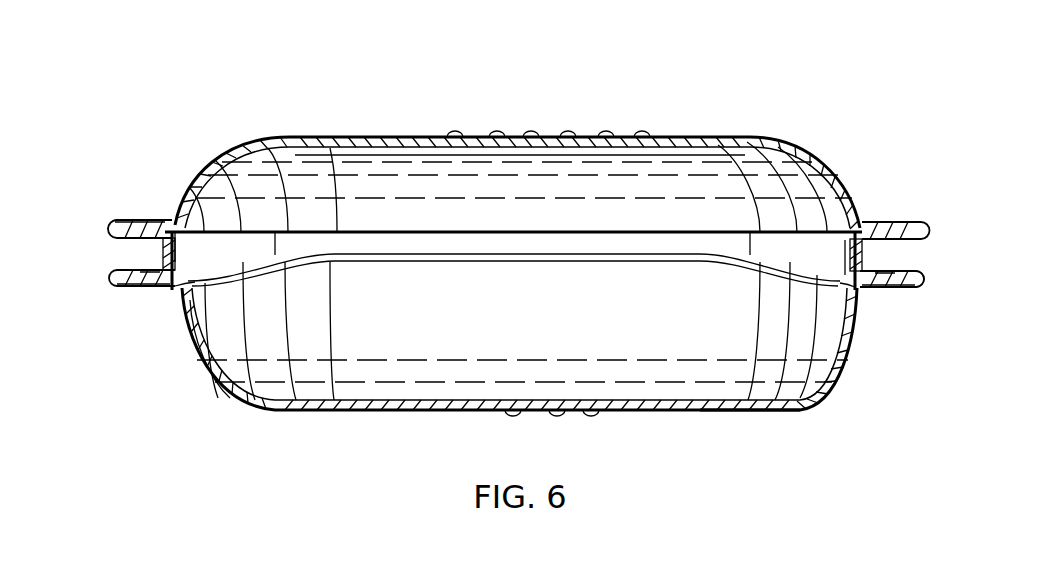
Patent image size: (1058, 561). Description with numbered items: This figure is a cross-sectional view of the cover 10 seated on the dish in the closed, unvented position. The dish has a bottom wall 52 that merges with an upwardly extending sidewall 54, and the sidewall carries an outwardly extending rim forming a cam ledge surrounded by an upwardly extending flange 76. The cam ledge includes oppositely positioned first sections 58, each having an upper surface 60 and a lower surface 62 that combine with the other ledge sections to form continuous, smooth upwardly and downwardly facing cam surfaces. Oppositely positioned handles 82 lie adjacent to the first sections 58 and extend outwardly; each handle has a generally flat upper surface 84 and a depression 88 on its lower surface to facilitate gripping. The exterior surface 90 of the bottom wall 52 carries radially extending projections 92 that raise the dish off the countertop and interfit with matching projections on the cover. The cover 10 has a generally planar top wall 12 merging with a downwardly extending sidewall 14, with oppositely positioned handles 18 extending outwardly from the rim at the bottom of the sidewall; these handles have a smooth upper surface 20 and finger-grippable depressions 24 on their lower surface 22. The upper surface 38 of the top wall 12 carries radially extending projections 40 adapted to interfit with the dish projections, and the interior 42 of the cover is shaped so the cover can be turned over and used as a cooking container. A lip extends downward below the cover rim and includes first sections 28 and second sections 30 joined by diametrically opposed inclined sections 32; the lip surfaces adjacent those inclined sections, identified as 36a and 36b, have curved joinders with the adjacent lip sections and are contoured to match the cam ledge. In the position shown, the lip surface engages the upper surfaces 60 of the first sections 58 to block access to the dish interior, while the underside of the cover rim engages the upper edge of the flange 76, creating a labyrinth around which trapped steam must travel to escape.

The cover 10 is at (805, 135).
The top wall 12 is at (290, 136).
The sidewall 14 is at (184, 200).
The handles 18 is at (116, 220).
The upper surface 20 is at (123, 222).
The lower surface 22 is at (118, 243).
The depressions 24 is at (110, 252).
The first sections 28 is at (182, 253).
The second sections 30 is at (550, 243).
The inclined sections 32 is at (273, 257).
The lip surface 36a is at (757, 268).
The lip surface 36b is at (270, 270).
The upper surface 38 is at (484, 137).
The projections 40 is at (530, 137).
The interior 42 is at (515, 217).
The bottom wall 52 is at (297, 410).
The sidewall 54 is at (196, 330).
The first sections 58 is at (198, 281).
The upper surface 60 is at (847, 273).
The lower surface 62 is at (186, 282).
The flange 76 is at (890, 257).
The handles 82 is at (112, 288).
The upper surface 84 is at (932, 268).
The depression 88 is at (147, 288).
The exterior surface 90 is at (738, 413).
The projections 92 is at (518, 413).